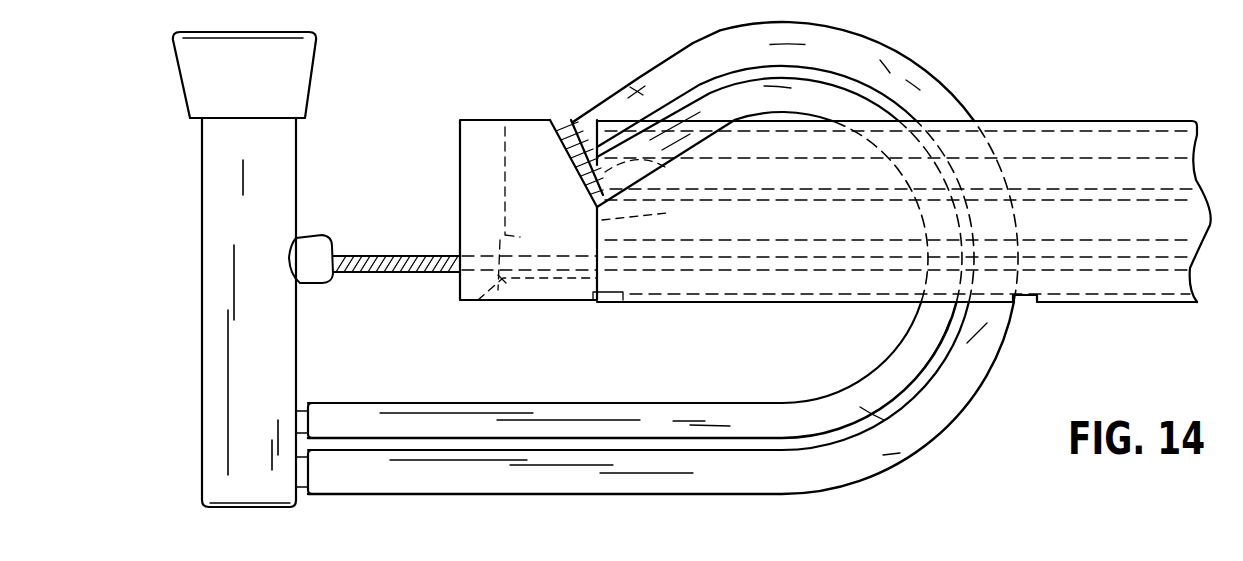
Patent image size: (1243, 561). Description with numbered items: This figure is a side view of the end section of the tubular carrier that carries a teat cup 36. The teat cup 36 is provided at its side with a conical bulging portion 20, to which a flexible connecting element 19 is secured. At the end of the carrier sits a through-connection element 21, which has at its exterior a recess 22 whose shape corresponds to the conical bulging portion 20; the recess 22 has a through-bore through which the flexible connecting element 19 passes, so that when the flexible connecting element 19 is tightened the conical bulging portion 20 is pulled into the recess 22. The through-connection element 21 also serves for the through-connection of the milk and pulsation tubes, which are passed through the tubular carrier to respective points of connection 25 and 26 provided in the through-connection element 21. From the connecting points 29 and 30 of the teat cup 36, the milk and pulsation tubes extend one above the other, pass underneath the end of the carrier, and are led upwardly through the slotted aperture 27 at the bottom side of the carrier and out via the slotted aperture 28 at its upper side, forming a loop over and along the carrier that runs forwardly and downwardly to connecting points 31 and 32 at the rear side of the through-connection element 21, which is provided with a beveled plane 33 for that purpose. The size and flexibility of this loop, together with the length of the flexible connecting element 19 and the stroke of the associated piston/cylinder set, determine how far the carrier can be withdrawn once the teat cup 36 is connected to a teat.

The flexible connecting element 19 is at (373, 273).
The conical bulging portion 20 is at (310, 240).
The through-connection element 21 is at (480, 118).
The recess 22 is at (478, 301).
The point of connection 25 is at (658, 224).
The point of connection 26 is at (665, 167).
The slotted aperture 27 is at (847, 303).
The slotted aperture 28 is at (833, 206).
The connecting point 29 is at (347, 475).
The connecting point 30 is at (307, 423).
The connecting point 31 is at (560, 143).
The connecting point 32 is at (583, 190).
The beveled plane 33 is at (577, 163).
The teat cup 36 is at (270, 168).